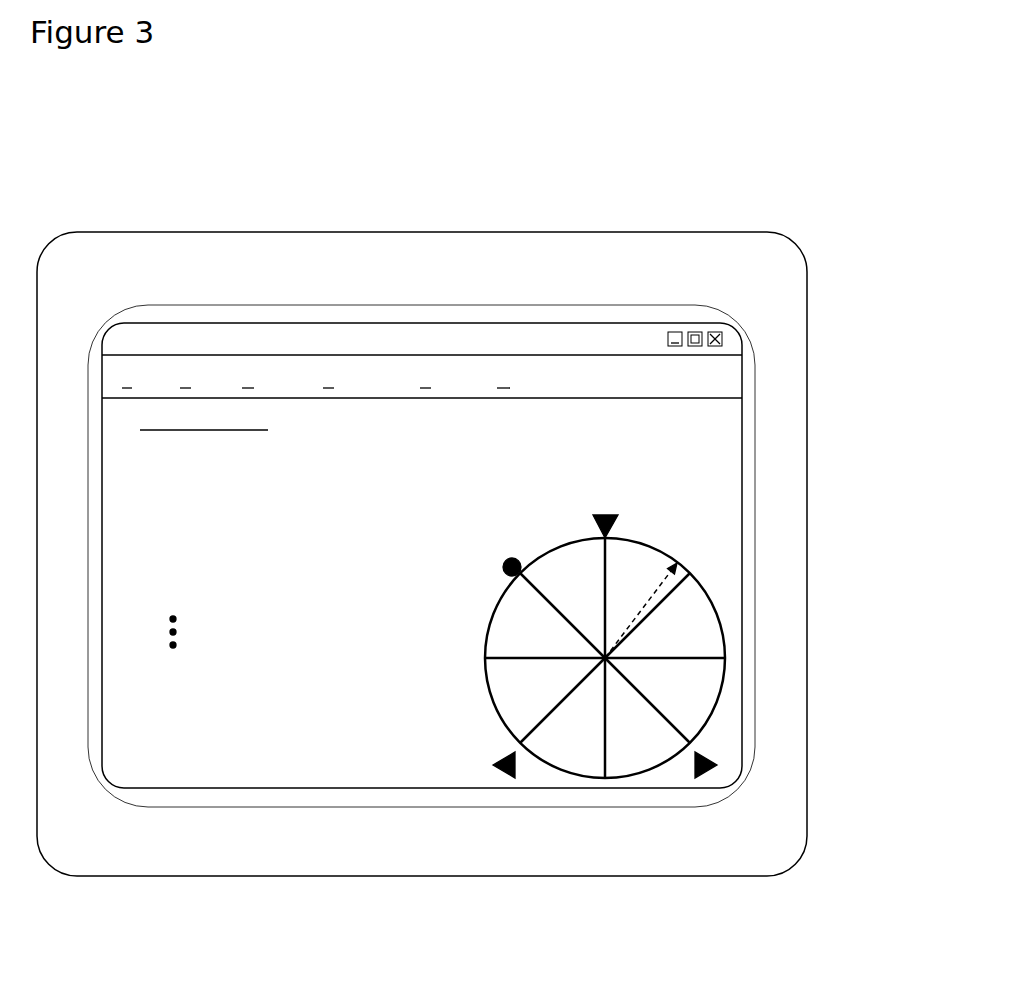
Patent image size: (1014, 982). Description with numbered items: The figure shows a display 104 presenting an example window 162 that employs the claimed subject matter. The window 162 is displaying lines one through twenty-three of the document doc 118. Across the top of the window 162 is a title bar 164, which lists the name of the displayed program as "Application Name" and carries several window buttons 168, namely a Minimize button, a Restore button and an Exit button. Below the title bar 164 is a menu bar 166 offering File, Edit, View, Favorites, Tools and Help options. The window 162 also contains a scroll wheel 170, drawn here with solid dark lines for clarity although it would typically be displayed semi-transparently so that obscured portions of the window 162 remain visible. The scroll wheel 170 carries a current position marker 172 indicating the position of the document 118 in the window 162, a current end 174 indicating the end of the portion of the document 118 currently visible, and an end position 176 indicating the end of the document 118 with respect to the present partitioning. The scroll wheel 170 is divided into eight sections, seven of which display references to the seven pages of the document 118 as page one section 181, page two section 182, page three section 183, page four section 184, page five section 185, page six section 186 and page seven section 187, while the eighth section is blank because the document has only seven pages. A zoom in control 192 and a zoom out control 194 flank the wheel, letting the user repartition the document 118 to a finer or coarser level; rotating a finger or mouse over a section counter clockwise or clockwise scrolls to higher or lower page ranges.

The display 104 is at (361, 146).
The doc_1 118 is at (308, 702).
The window 162 is at (412, 788).
The title bar 164 is at (145, 328).
The menu bar 166 is at (590, 377).
The window buttons 168 is at (695, 323).
The scroll wheel 170 is at (547, 555).
The current position marker 172 is at (598, 517).
The current end 174 is at (677, 560).
The end position 176 is at (503, 566).
The P_1 181 is at (619, 592).
The P_2 182 is at (669, 650).
The P_3 183 is at (670, 710).
The P_4 184 is at (620, 761).
The P_5 185 is at (562, 761).
The P_6 186 is at (510, 710).
The P_7 187 is at (510, 650).
The zoom in 192 is at (493, 767).
The zoom out 194 is at (697, 784).